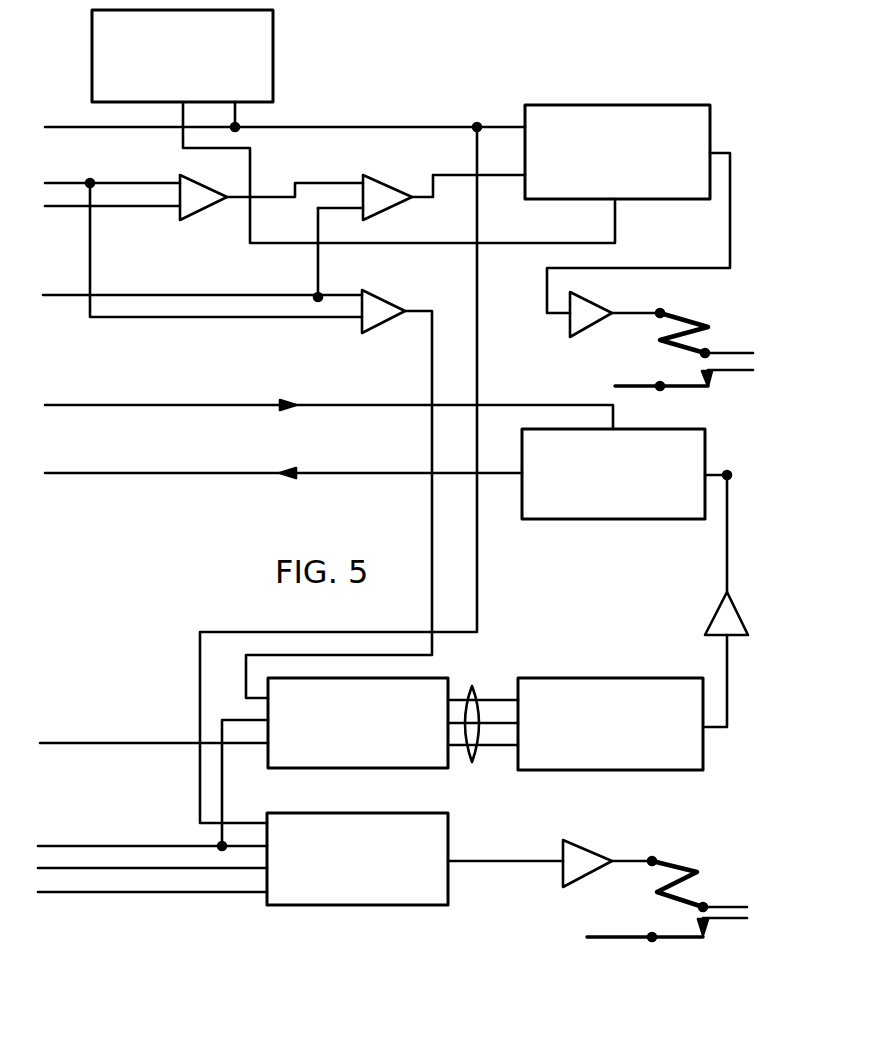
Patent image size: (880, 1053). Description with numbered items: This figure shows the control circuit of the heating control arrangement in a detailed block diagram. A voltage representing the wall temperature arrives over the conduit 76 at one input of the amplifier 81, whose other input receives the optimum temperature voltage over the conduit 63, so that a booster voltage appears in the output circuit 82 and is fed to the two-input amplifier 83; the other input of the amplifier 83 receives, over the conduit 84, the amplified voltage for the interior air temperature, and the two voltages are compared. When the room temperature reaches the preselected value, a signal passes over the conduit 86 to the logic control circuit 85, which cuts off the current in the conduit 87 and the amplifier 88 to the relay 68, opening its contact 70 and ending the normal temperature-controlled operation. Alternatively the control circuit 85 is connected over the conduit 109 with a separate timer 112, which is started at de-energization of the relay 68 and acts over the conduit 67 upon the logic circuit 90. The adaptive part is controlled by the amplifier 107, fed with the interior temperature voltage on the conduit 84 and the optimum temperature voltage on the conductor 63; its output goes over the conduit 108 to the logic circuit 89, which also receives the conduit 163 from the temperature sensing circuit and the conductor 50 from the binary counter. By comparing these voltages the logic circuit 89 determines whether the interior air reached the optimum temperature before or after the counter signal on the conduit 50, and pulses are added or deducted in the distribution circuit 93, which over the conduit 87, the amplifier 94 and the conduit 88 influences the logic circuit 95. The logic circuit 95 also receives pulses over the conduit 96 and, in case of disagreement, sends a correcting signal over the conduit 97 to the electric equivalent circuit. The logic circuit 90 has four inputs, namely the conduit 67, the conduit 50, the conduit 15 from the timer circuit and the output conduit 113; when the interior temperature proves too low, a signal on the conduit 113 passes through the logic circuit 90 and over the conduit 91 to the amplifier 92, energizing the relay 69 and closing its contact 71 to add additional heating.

The timer 112 is at (140, 43).
The conduit 67 is at (92, 124).
The optimum temperature conduit 63 is at (158, 181).
The conduit 76 is at (110, 208).
The amplifier 81 is at (198, 201).
The output circuit 82 is at (278, 184).
The amplifier 83 is at (385, 197).
The conduit 86 is at (426, 203).
The logic control circuit 85 is at (561, 136).
The conduit 109 is at (552, 246).
The conduit 87 is at (727, 242).
The amplifier 88 is at (590, 313).
The relay 68 is at (708, 340).
The contact 70 is at (710, 378).
The conduit 84 is at (220, 294).
The amplifier 107 is at (339, 483).
The conduit 96 is at (362, 403).
The conduit 97 is at (380, 471).
The logic circuit 95 is at (559, 459).
The amplifier 94 is at (722, 618).
The logic circuit 89 is at (305, 709).
The conduit 108 is at (482, 692).
The distribution circuit 93 is at (557, 711).
The conduit 163 is at (122, 742).
The output conduit 50 is at (224, 793).
The logic circuit 90 is at (305, 846).
The conduit 15 is at (80, 870).
The output conduit 113 is at (243, 894).
The conduit 91 is at (486, 858).
The amplifier 92 is at (583, 858).
The relay 69 is at (693, 890).
The contact 71 is at (706, 934).